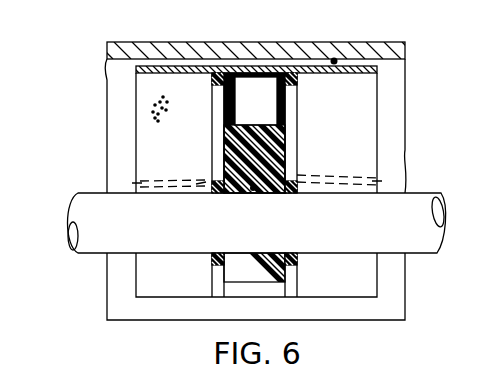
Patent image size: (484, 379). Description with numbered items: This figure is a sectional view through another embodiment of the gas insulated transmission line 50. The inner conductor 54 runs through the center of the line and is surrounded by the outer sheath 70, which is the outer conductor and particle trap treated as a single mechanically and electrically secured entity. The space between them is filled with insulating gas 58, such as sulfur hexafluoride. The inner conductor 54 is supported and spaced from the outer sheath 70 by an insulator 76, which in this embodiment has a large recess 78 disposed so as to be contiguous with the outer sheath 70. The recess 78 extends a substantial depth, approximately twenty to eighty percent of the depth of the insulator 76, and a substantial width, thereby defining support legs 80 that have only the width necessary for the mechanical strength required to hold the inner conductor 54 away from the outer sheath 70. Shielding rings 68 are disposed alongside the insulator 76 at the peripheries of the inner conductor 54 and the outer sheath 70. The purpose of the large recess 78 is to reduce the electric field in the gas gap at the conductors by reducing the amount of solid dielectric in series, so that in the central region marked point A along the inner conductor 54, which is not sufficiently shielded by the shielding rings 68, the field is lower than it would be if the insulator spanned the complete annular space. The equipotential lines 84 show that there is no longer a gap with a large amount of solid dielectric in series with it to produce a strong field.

The gas insulated transmission line 50 is at (231, 179).
The inner conductor 54 is at (257, 240).
The insulating gas 58 is at (118, 108).
The shielding rings 68 is at (256, 185).
The outer sheath 70 is at (257, 43).
The insulator 76 is at (260, 180).
The recess 78 is at (260, 180).
The support legs 80 is at (258, 101).
The equipotential lines 84 is at (257, 166).
The point A is at (244, 208).